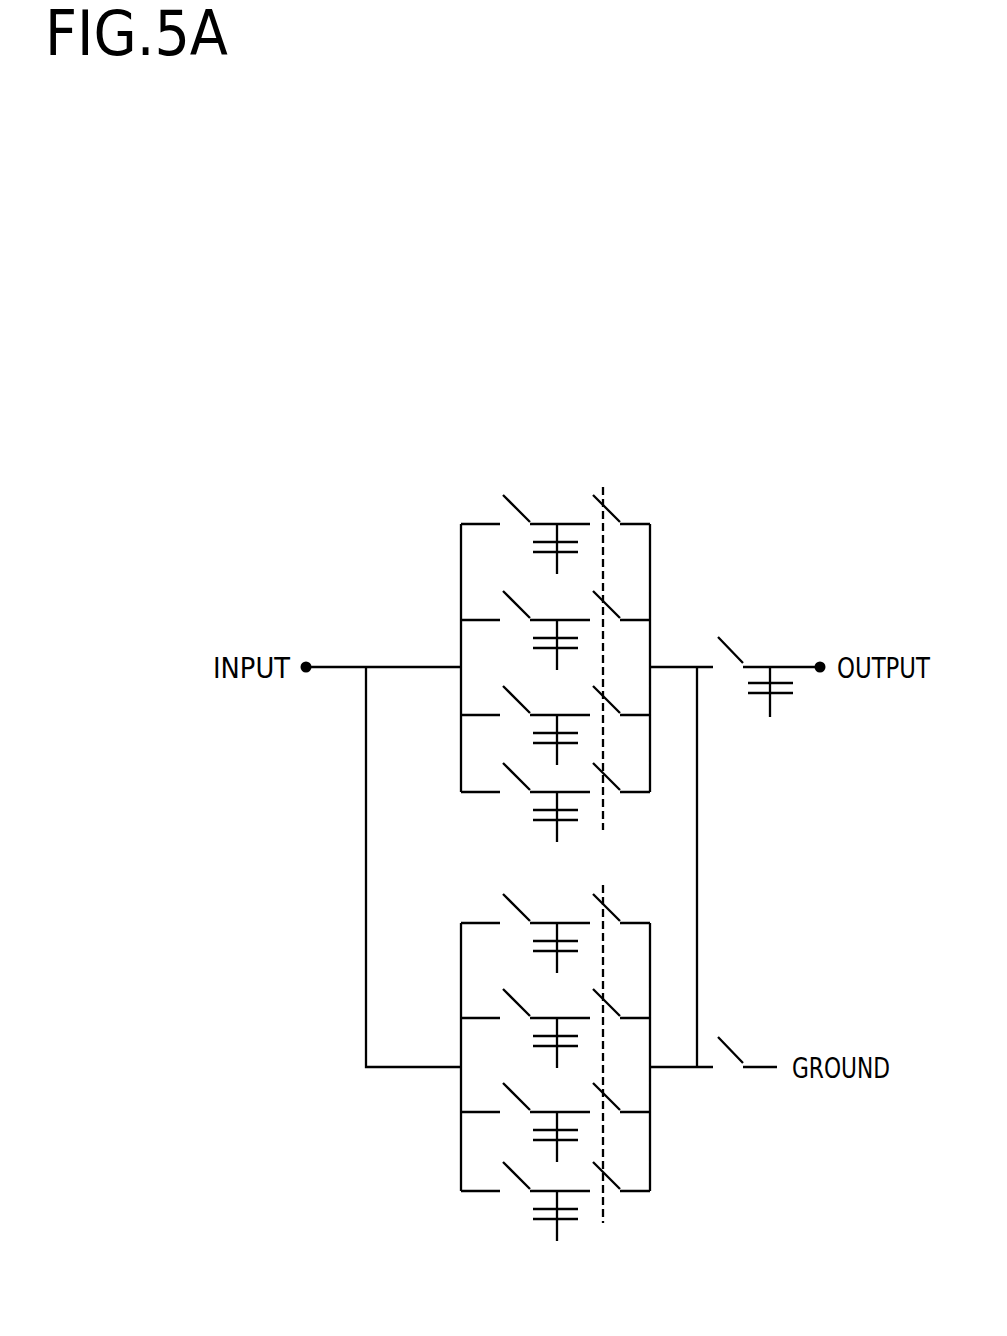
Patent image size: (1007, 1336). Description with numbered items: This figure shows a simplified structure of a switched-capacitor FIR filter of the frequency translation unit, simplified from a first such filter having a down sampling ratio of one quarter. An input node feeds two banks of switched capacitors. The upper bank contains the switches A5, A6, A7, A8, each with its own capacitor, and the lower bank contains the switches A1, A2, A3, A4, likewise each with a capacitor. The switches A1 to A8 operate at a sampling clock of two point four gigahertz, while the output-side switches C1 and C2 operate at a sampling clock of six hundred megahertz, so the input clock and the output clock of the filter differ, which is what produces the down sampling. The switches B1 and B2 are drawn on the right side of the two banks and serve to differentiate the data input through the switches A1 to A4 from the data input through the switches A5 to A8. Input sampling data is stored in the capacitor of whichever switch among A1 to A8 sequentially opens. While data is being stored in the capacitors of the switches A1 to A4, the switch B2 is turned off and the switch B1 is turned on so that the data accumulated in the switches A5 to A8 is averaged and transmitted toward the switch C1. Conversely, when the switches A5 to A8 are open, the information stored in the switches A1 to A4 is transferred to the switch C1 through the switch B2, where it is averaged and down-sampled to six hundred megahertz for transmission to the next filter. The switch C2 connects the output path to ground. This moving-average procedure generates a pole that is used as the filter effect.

The switch A1 is at (525, 1201).
The switch A2 is at (525, 1122).
The switch A3 is at (525, 1028).
The switch A4 is at (525, 933).
The switch A5 is at (525, 802).
The switch A6 is at (525, 725).
The switch A7 is at (525, 630).
The switch A8 is at (525, 534).
The switch B1 is at (623, 658).
The switch B2 is at (623, 1054).
The switch C1 is at (766, 670).
The switch C2 is at (747, 1045).